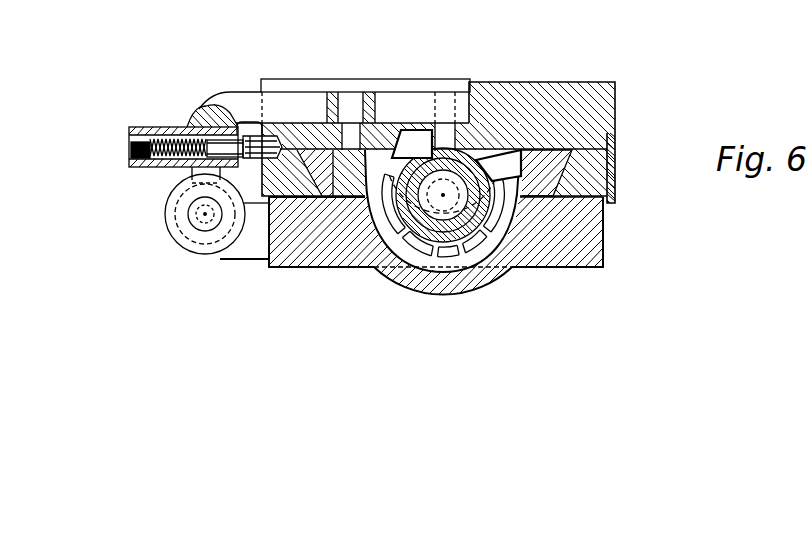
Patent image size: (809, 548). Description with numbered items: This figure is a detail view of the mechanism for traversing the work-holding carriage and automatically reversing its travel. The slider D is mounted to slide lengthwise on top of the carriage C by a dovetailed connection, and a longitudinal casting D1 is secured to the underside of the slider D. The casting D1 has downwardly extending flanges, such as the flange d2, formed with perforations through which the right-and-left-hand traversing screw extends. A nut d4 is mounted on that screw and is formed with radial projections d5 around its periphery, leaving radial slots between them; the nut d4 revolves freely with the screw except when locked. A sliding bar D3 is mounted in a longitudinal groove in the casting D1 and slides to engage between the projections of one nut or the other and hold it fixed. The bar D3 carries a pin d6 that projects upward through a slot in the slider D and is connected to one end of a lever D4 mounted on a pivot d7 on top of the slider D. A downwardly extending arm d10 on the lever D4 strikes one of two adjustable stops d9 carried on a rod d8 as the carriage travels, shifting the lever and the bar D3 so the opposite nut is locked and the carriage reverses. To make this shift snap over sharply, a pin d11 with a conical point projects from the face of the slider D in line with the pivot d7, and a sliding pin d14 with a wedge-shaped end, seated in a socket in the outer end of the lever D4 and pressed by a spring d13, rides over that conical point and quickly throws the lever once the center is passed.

The slider D is at (603, 108).
The lever D4 is at (292, 104).
The longitudinal casting D1 is at (391, 118).
The sliding bar D3 is at (462, 127).
The pivot d7 is at (351, 103).
The pin d6 is at (448, 99).
The nut d4 is at (383, 262).
The carriage C is at (582, 231).
The radial projections d5 is at (412, 144).
The flange d2 is at (498, 165).
The spring d13 is at (163, 140).
The pin with conical point d11 is at (222, 165).
The sliding pin d14 is at (218, 137).
The arm d10 is at (190, 170).
The adjustable stops d9 is at (177, 210).
The rod d8 is at (202, 219).